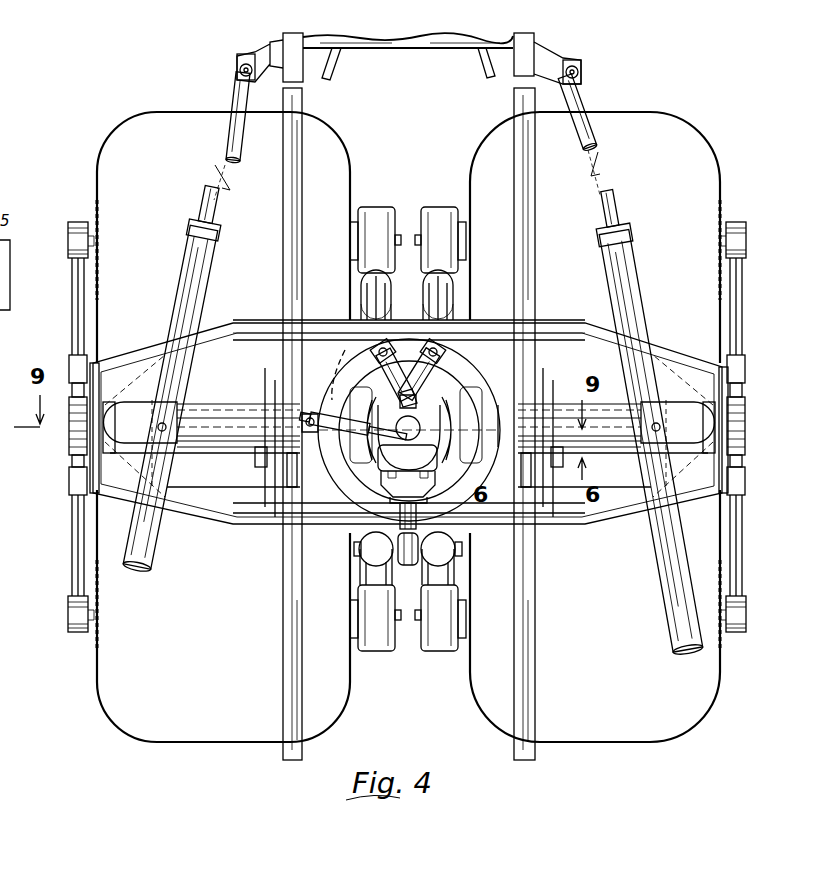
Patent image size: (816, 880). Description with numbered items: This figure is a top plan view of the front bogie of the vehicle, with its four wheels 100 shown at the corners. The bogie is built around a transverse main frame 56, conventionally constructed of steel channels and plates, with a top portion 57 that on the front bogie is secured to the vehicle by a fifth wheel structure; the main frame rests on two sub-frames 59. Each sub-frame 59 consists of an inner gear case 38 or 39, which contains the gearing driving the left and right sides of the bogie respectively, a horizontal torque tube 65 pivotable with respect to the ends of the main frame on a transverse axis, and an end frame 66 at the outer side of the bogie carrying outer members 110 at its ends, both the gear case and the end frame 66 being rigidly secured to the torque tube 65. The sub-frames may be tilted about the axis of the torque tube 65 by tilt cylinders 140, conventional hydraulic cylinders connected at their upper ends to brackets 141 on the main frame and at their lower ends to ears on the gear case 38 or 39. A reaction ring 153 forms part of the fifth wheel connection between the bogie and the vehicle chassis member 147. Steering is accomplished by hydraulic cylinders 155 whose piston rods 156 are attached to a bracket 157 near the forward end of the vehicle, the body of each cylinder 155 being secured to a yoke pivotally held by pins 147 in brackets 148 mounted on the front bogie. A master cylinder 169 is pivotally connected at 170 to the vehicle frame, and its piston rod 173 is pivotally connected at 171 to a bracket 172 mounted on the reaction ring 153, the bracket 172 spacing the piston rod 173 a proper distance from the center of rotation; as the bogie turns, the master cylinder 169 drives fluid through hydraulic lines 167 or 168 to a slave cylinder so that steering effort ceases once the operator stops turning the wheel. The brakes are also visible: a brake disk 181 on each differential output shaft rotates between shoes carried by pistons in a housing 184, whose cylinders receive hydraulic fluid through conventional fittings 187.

The gear case 38 is at (374, 208).
The gear case 39 is at (434, 208).
The transverse main frame 56 is at (590, 332).
The top portion 57 is at (490, 330).
The sub-frame 59 is at (72, 342).
The horizontal torque tube 65 is at (183, 453).
The end frame 66 is at (72, 282).
The tire 100 is at (160, 115).
The sprocket 110 is at (68, 238).
The tilt cylinder 140 is at (368, 288).
The bracket 141 is at (360, 554).
The vehicle chassis member 147 is at (178, 427).
The bracket 148 is at (69, 452).
The reaction ring 153 is at (456, 500).
The hydraulic cylinder 155 is at (178, 296).
The piston rod 156 is at (200, 190).
The bracket 157 is at (246, 52).
The hydraulic line 167 is at (356, 422).
The hydraulic line 168 is at (385, 376).
The master cylinder 169 is at (343, 348).
The pivotal connection 170 is at (295, 412).
The pivotal connection 171 is at (422, 390).
The bracket 172 is at (418, 366).
The piston rod 173 is at (392, 406).
The brake disk 181 is at (540, 412).
The housing 184 is at (256, 466).
The fitting 187 is at (2, 395).